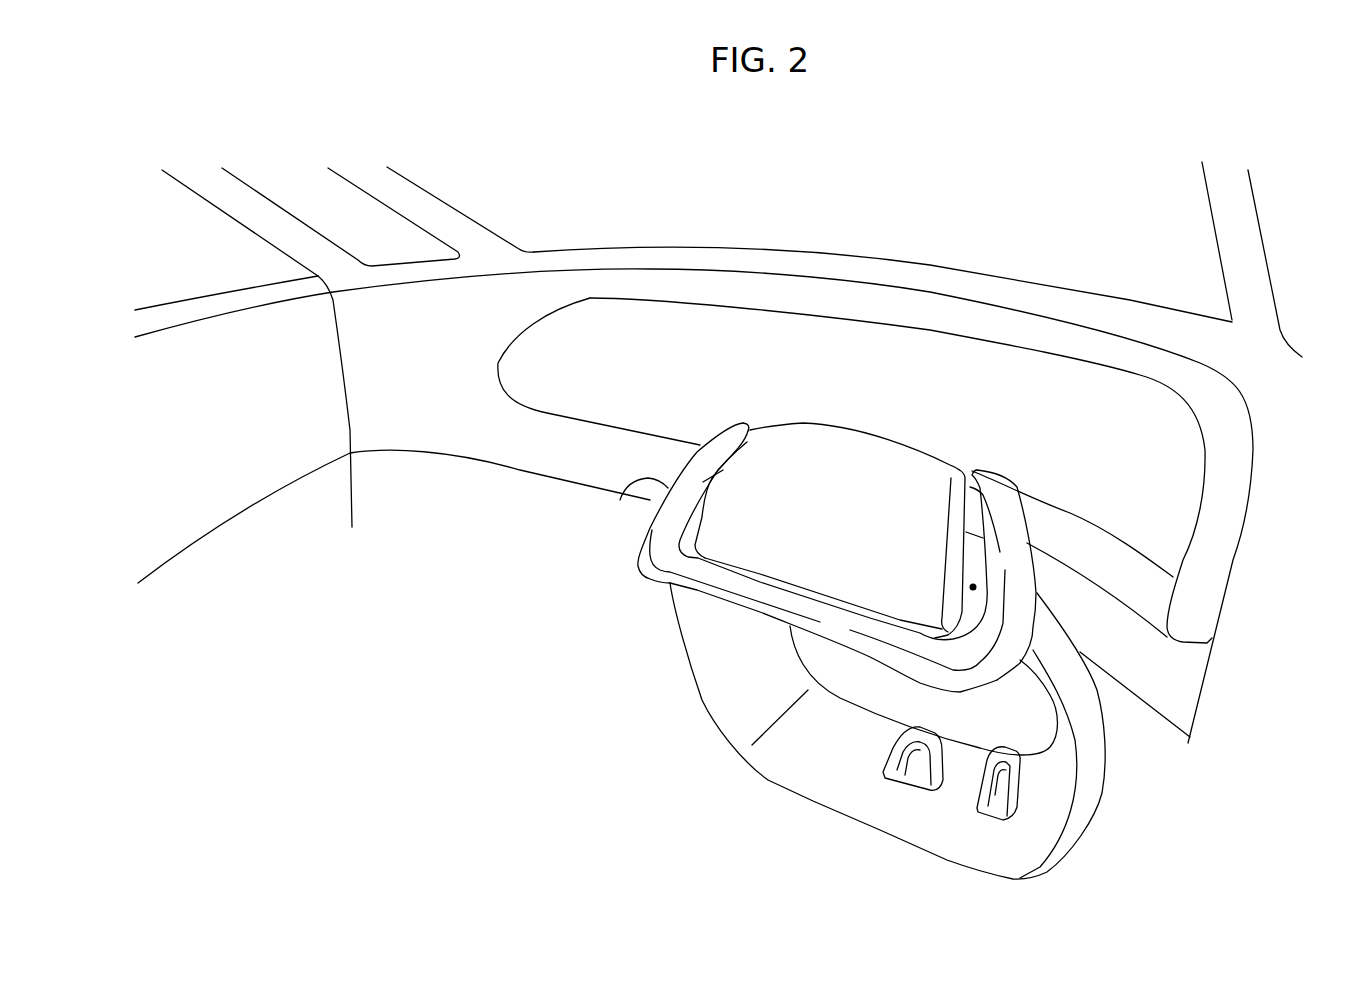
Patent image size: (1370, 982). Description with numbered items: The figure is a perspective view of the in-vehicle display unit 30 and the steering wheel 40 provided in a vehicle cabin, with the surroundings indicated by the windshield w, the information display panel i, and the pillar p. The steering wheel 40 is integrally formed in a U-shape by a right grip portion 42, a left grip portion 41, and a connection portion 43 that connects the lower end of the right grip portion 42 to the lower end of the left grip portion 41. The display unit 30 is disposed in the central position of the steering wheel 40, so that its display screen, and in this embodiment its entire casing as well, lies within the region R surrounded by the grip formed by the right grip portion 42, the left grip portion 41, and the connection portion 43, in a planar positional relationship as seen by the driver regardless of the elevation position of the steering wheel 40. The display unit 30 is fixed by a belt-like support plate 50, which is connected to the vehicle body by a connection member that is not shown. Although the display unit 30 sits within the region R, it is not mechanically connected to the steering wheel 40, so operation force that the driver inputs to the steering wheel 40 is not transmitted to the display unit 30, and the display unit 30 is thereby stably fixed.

The in-vehicle display unit 30 is at (903, 446).
The steering wheel 40 is at (639, 562).
The left grip portion 41 is at (627, 500).
The right grip portion 42 is at (1022, 512).
The connection portion 43 is at (728, 604).
The belt-like support plate 50 is at (1093, 725).
The region surrounded by the grip of the steering wheel R is at (975, 587).
The information display panel i is at (1177, 433).
The windshield w is at (1143, 217).
The pillar p is at (433, 192).